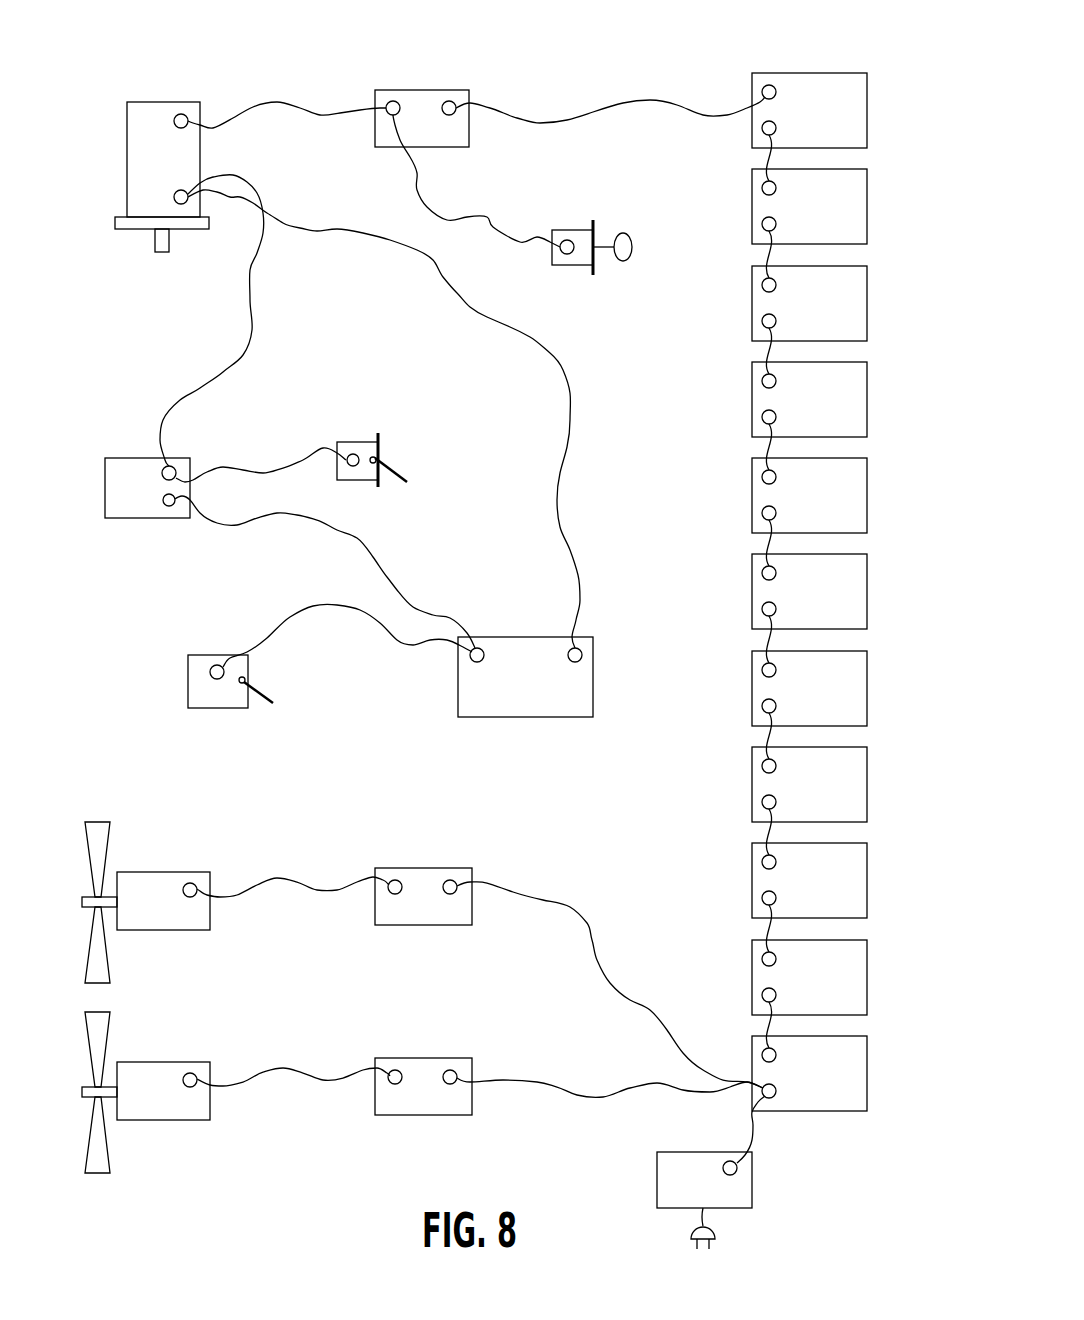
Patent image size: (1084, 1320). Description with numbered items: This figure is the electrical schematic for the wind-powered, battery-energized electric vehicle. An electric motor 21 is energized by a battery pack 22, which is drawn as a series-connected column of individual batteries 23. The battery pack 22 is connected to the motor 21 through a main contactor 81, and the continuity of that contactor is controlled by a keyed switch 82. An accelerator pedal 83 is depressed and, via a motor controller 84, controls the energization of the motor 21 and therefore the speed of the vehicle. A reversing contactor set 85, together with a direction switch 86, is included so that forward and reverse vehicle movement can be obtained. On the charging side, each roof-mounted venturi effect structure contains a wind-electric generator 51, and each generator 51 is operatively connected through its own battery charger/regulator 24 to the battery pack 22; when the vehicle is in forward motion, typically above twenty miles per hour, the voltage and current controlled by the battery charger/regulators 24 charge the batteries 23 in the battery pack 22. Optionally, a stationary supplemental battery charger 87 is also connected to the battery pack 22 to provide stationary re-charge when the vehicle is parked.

The electric motor 21 is at (155, 100).
The battery pack 22 is at (844, 555).
The batteries 23 is at (870, 878).
The battery charger/regulators 24 is at (420, 868).
The wind-electric generator 51 is at (160, 872).
The main contactor 81 is at (422, 90).
The keyed switch 82 is at (573, 230).
The accelerator pedal 83 is at (217, 655).
The motor controller 84 is at (527, 637).
The reversing contactor set 85 is at (127, 458).
The direction switch 86 is at (383, 437).
The stationary supplemental battery charger 87 is at (753, 1180).